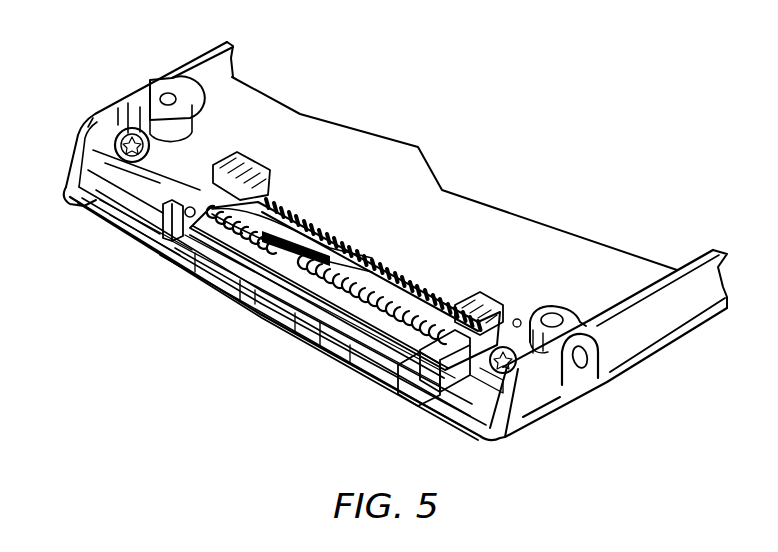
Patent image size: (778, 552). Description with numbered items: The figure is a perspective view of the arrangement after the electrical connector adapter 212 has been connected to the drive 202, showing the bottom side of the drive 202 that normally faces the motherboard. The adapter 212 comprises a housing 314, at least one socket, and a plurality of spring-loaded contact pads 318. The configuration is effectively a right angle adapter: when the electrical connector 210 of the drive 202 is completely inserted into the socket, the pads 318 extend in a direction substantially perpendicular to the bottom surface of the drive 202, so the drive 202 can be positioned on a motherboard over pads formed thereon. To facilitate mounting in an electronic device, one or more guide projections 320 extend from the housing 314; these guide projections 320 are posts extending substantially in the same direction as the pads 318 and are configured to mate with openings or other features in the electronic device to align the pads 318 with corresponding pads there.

The drive 202 is at (163, 62).
The electrical connector 210 is at (523, 410).
The electrical connector adapter 212 is at (407, 428).
The housing 314 is at (213, 193).
The spring-loaded contact pads 318 is at (358, 250).
The guide projections 320 is at (162, 243).